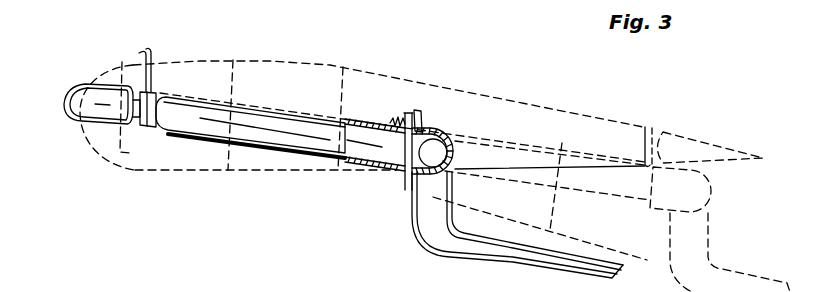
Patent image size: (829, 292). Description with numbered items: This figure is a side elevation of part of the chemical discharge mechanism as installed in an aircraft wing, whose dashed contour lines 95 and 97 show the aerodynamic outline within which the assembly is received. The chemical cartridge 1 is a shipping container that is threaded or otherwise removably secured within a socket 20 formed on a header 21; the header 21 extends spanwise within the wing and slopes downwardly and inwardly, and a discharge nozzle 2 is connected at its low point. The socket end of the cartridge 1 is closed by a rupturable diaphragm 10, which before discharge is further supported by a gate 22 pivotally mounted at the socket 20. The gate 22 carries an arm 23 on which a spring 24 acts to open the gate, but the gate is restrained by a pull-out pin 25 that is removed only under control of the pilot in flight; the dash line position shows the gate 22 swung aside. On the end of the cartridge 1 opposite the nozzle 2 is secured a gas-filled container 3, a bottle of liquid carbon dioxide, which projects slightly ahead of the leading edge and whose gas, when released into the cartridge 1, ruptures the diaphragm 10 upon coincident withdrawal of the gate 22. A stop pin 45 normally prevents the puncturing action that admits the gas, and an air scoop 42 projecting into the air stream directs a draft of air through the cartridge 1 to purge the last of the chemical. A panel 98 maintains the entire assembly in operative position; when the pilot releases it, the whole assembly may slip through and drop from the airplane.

The cartridge 1 is at (203, 110).
The discharge nozzle 2 is at (488, 248).
The gas-filled container 3 is at (73, 97).
The rupturable diaphragm 10 is at (377, 167).
The socket 20 is at (403, 170).
The header 21 is at (468, 146).
The gate 22 is at (455, 129).
The arm 23 is at (421, 122).
The spring 24 is at (393, 115).
The pull-out pin 25 is at (412, 113).
The air scoop 42 is at (138, 55).
The stop pin 45 is at (157, 97).
The hull outline 95 is at (222, 158).
The deck line 97 is at (293, 105).
The panel 98 is at (528, 167).